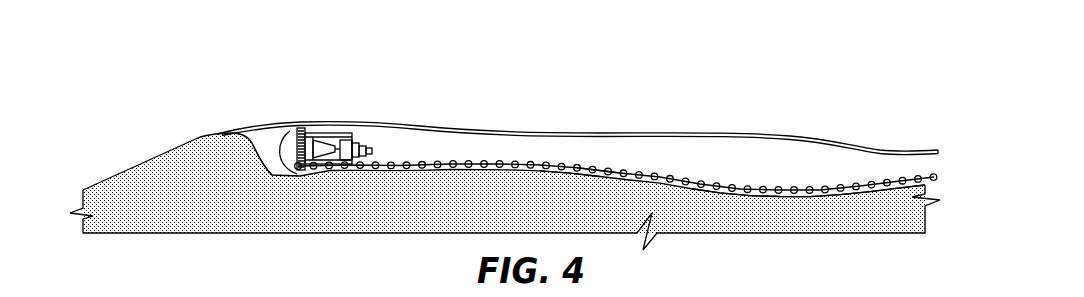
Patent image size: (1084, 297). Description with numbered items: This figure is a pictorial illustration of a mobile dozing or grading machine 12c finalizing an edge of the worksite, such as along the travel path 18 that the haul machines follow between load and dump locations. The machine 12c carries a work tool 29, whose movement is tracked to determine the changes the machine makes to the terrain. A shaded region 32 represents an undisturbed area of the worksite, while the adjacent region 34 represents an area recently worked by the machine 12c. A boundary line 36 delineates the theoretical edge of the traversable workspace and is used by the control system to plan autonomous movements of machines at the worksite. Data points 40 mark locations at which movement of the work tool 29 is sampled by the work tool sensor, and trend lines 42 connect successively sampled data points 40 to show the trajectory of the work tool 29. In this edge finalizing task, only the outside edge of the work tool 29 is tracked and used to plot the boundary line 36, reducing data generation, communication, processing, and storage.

The mobile dozing or grading machine 12c is at (355, 133).
The travel path 18 is at (591, 116).
The work tool 29 is at (269, 169).
The shaded region 32 is at (353, 220).
The region 34 is at (755, 171).
The boundary line 36 is at (487, 171).
The data points 40 is at (562, 171).
The trend lines 42 is at (585, 174).